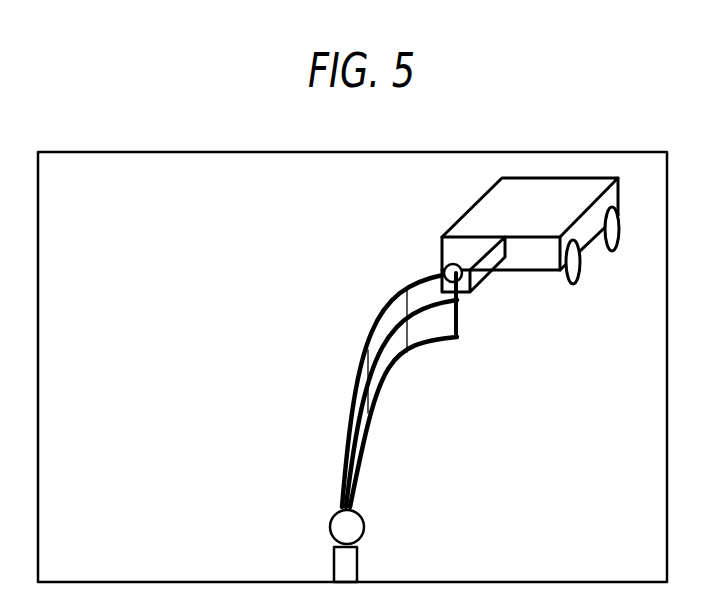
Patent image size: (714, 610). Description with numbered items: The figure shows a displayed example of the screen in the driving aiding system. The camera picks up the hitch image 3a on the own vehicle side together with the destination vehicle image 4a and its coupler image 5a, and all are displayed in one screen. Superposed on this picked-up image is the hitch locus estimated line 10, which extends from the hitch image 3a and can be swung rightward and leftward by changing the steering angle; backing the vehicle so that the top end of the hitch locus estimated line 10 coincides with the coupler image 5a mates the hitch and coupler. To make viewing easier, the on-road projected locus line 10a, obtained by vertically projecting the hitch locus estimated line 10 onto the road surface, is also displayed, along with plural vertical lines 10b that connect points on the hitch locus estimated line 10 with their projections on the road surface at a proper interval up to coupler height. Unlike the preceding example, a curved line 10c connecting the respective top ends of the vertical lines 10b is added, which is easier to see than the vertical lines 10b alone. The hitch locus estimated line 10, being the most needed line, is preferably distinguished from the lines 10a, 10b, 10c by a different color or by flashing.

The destination vehicle image 4a is at (490, 207).
The coupler image 5a is at (446, 266).
The hitch locus estimated line 10 is at (358, 392).
The on-road projected locus line 10a is at (380, 393).
The vertical lines 10b is at (413, 332).
The curved line 10c is at (385, 312).
The hitch image 3a is at (338, 526).